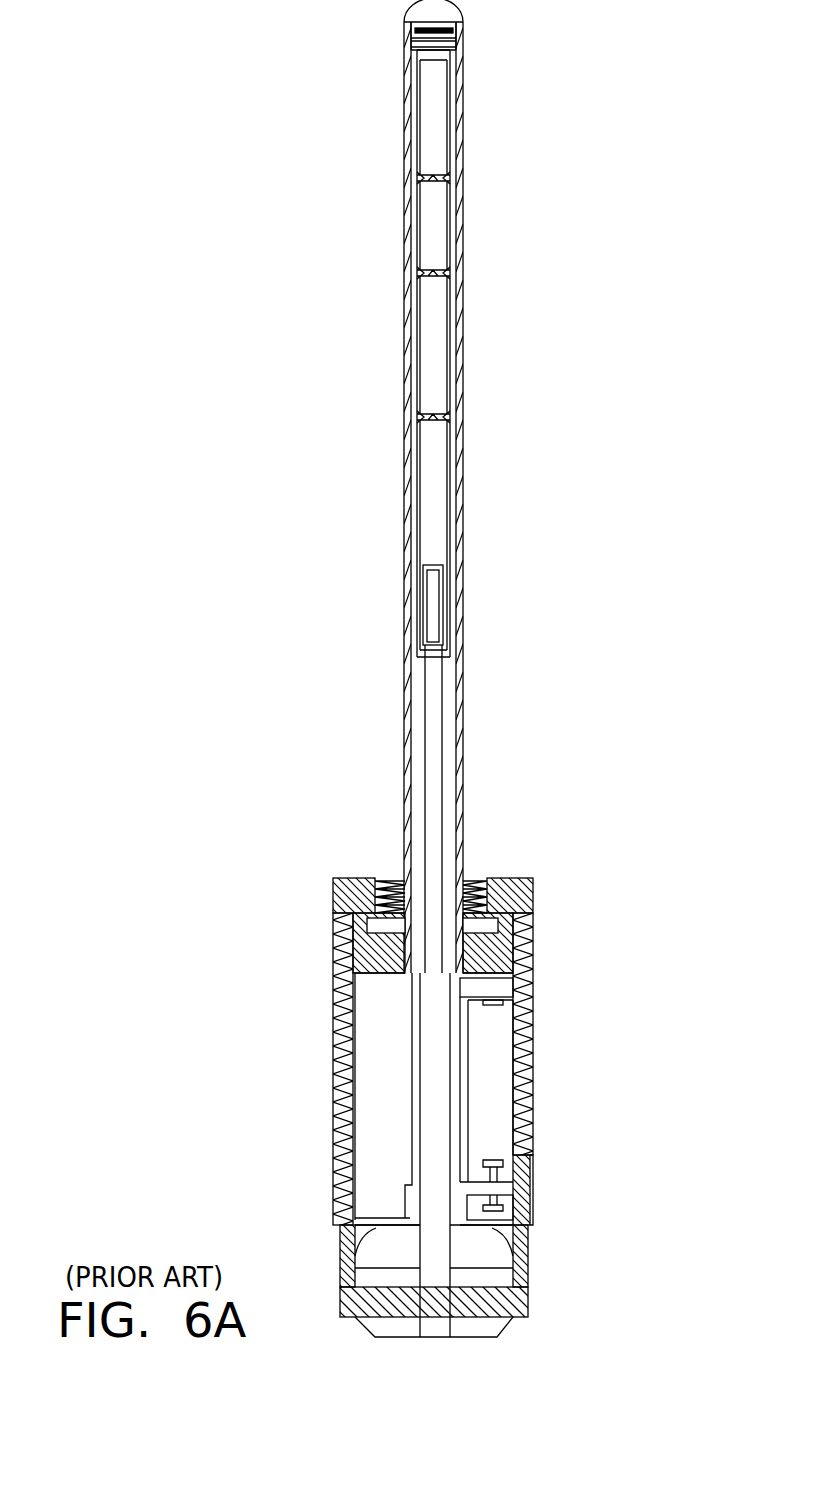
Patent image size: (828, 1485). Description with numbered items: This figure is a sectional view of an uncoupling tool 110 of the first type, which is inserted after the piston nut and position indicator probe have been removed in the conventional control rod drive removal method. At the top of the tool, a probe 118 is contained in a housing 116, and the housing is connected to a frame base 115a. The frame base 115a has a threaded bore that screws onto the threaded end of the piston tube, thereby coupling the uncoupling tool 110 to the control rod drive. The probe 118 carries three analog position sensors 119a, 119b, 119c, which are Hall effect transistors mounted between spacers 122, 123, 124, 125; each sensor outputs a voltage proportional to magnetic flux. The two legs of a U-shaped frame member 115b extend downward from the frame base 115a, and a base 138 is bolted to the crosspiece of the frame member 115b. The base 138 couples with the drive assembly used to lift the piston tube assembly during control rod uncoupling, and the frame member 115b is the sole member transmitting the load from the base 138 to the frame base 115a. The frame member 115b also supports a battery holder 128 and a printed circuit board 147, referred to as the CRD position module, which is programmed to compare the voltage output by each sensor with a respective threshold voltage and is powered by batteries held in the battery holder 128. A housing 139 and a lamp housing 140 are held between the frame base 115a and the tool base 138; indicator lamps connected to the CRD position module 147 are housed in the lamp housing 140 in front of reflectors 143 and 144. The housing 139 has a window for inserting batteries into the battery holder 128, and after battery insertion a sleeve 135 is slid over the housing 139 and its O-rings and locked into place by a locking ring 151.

The uncoupling tool 110 is at (555, 641).
The housing 116 is at (464, 685).
The probe 118 is at (405, 10).
The analog position sensor 119a is at (425, 178).
The analog position sensor 119b is at (425, 274).
The analog position sensor 119c is at (425, 417).
The spacer 122 is at (440, 106).
The spacer 123 is at (441, 236).
The spacer 124 is at (431, 361).
The spacer 125 is at (433, 490).
The locking ring 151 is at (336, 885).
The frame base 115a is at (530, 930).
The U-shaped frame member 115b is at (435, 1090).
The sleeve 135 is at (336, 1000).
The housing 139 is at (342, 1046).
The printed circuit board 147 is at (412, 1102).
The battery holder 128 is at (455, 1028).
The reflector 143 is at (522, 1222).
The reflector 144 is at (348, 1285).
The lamp housing 140 is at (530, 1276).
The base 138 is at (500, 1335).